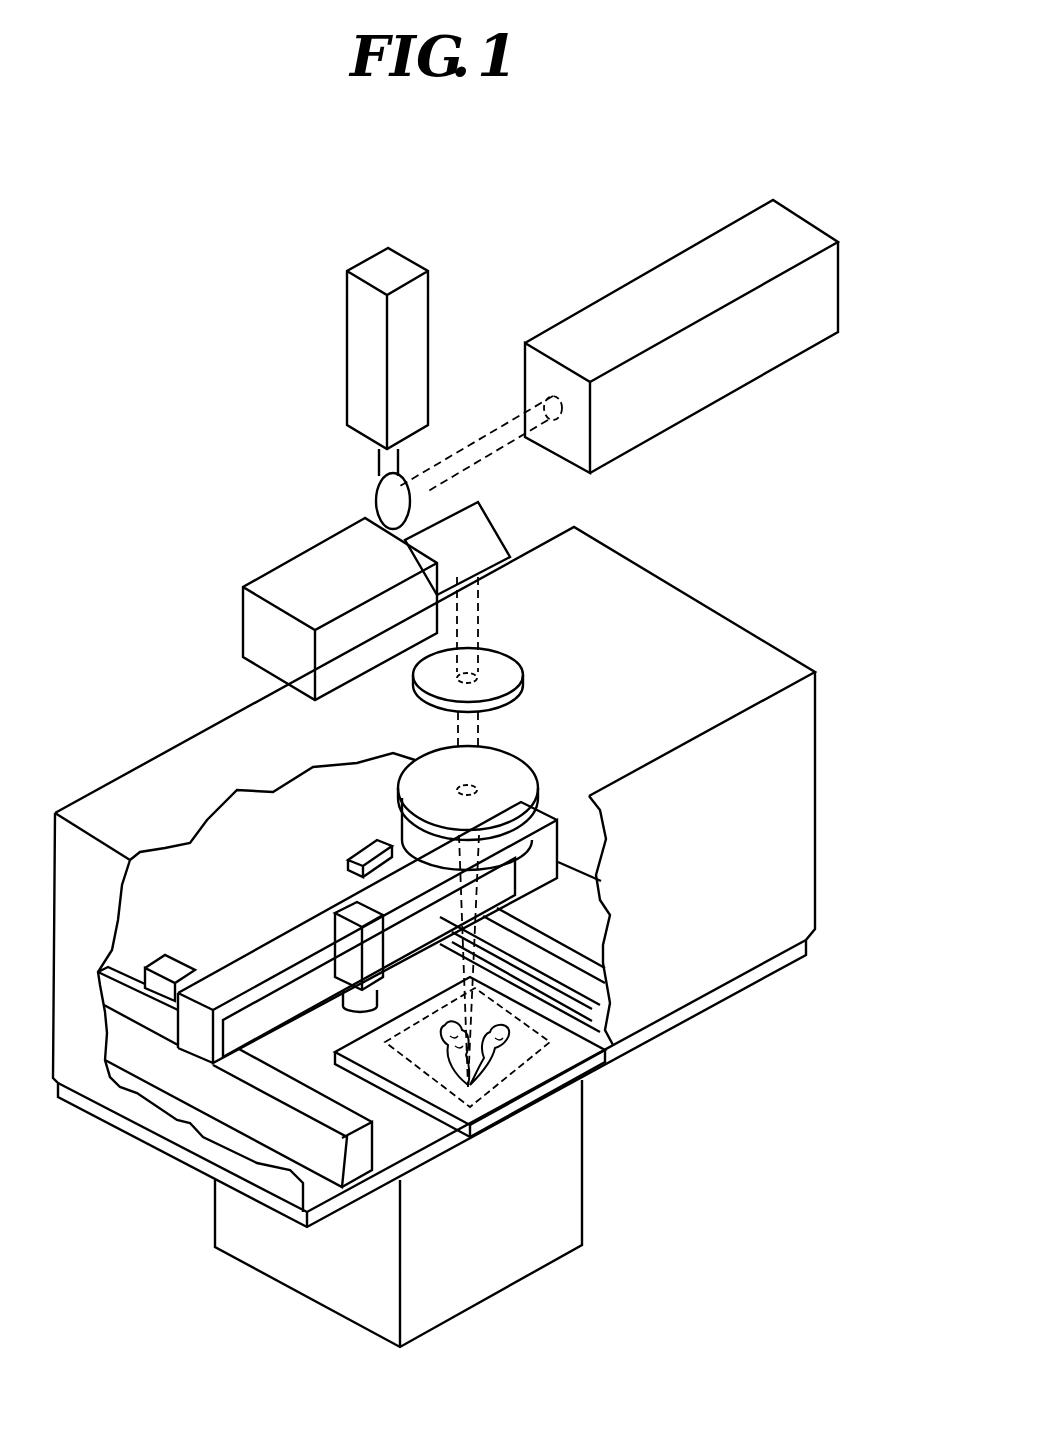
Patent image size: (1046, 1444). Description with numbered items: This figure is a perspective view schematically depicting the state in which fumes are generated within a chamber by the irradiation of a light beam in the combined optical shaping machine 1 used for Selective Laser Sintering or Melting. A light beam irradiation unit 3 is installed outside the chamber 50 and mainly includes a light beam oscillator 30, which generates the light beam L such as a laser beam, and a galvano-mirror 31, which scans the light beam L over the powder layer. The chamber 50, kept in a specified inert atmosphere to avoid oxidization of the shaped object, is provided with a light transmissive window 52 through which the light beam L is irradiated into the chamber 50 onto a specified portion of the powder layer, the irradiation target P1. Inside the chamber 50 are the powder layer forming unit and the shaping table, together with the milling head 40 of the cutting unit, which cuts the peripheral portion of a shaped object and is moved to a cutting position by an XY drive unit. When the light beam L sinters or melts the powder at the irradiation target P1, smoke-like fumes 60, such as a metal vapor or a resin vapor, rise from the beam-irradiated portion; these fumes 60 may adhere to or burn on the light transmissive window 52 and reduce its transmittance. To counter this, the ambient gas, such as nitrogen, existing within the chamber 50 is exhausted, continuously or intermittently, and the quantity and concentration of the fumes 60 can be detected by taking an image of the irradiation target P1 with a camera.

The combined optical shaping machine 1 is at (176, 462).
The light beam irradiation unit 3 is at (542, 694).
The light beam oscillator 30 is at (655, 287).
The galvano-mirror 31 is at (376, 505).
The milling head 40 is at (358, 999).
The chamber 50 is at (778, 814).
The light transmissive window 52 is at (438, 763).
The fumes 60 is at (493, 1050).
The light beam L is at (446, 436).
The irradiation target P1 is at (485, 1097).